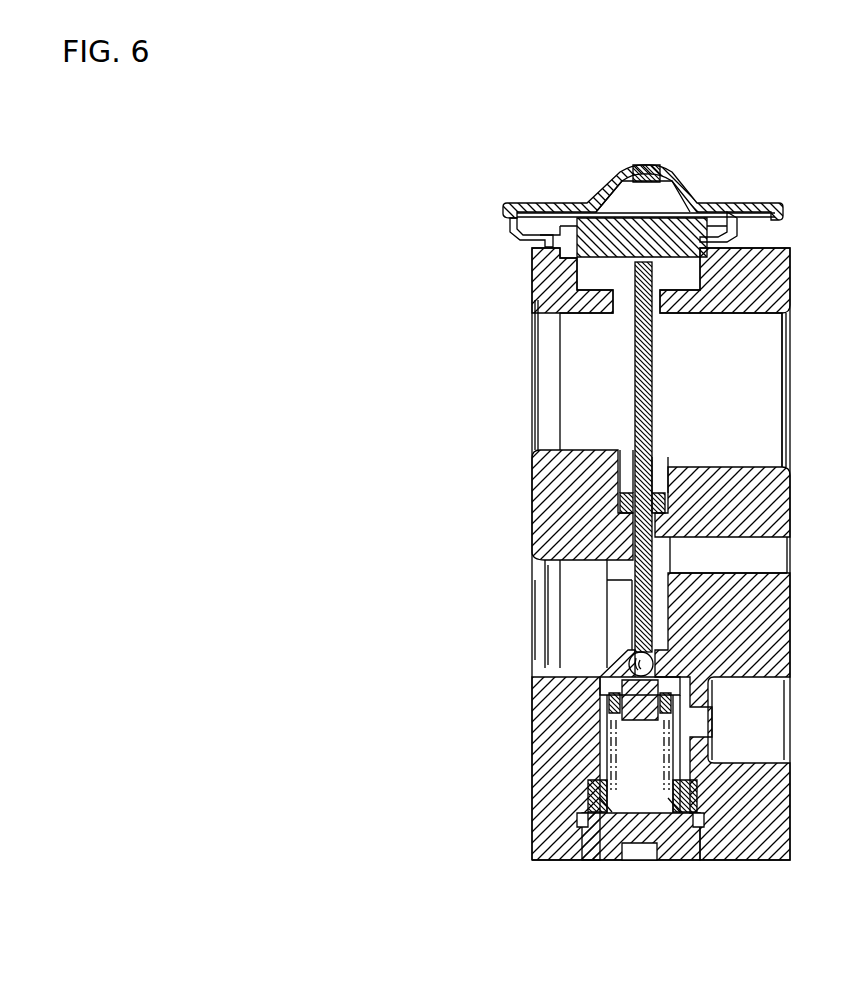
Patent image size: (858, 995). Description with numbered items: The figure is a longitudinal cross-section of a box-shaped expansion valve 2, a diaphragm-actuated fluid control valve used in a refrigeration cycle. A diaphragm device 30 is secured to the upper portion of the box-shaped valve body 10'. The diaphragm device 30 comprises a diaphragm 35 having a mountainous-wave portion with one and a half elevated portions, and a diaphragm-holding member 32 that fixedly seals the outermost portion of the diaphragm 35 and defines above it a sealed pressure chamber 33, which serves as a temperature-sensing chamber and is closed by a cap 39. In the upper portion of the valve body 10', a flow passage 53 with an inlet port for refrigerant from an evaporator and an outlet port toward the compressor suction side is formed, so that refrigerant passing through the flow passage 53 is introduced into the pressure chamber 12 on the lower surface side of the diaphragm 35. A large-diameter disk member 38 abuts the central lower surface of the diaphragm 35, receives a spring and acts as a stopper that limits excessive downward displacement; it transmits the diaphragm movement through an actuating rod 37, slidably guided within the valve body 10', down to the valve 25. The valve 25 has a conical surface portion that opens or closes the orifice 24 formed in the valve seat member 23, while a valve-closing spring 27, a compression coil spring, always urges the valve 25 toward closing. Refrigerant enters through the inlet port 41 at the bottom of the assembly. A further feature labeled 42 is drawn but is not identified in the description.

The box-shaped expansion valve 2 is at (433, 158).
The box-shaped valve body 10' is at (640, 537).
The pressure chamber 12 is at (560, 306).
The valve seat member 23 is at (628, 667).
The orifice 24 is at (641, 664).
The valve 25 is at (602, 691).
The valve-closing spring 27 is at (600, 702).
The diaphragm device 30 is at (699, 194).
The diaphragm-holding member 32 is at (533, 203).
The pressure chamber 33 is at (620, 193).
The diaphragm 35 is at (563, 208).
The actuating rod 37 is at (657, 362).
The large-diameter disk member 38 is at (694, 232).
The cap 39 is at (642, 164).
The inlet port 41 is at (767, 762).
The passage 42 is at (536, 566).
The flow passage 53 is at (566, 446).